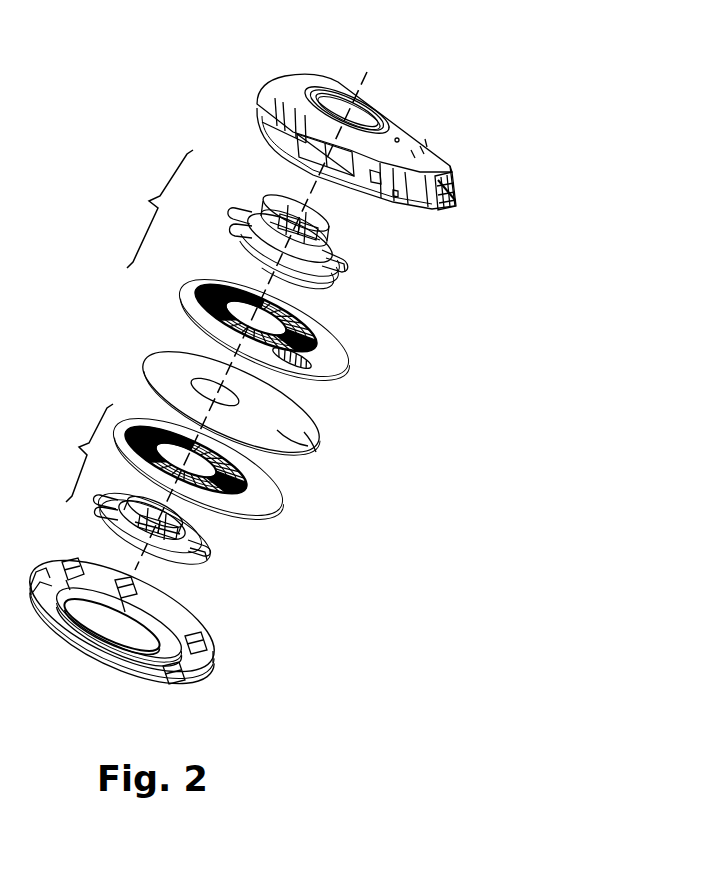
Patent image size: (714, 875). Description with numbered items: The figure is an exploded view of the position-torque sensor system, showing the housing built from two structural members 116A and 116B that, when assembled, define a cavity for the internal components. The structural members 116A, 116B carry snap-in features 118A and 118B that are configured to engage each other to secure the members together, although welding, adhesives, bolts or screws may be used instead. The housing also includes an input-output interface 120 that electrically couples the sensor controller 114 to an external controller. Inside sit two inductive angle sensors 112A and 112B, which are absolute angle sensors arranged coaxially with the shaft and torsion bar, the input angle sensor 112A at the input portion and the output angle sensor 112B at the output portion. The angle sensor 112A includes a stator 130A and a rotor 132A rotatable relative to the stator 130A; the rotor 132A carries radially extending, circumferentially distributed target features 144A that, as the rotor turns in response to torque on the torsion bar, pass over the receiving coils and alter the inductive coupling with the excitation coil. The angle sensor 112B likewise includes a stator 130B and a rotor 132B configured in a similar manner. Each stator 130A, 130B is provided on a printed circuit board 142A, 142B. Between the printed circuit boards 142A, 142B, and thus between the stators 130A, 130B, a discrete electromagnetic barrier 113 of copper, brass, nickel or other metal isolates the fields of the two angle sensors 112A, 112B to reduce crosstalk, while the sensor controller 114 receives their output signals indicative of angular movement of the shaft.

The input angle sensor 112A is at (145, 209).
The output angle sensor 112B is at (73, 453).
The electromagnetic barrier 113 is at (308, 448).
The sensor controller 114 is at (322, 374).
The structural member 116A is at (288, 82).
The structural member 116B is at (205, 680).
The snap-in feature 118A is at (262, 119).
The snap-in feature 118B is at (208, 641).
The input-output interface 120 is at (448, 194).
The stator 130A is at (330, 330).
The stator 130B is at (250, 481).
The rotor 132A is at (256, 193).
The rotor 132B is at (215, 570).
The printed circuit board 142A is at (187, 292).
The printed circuit board 142B is at (262, 512).
The target feature 144A is at (346, 270).